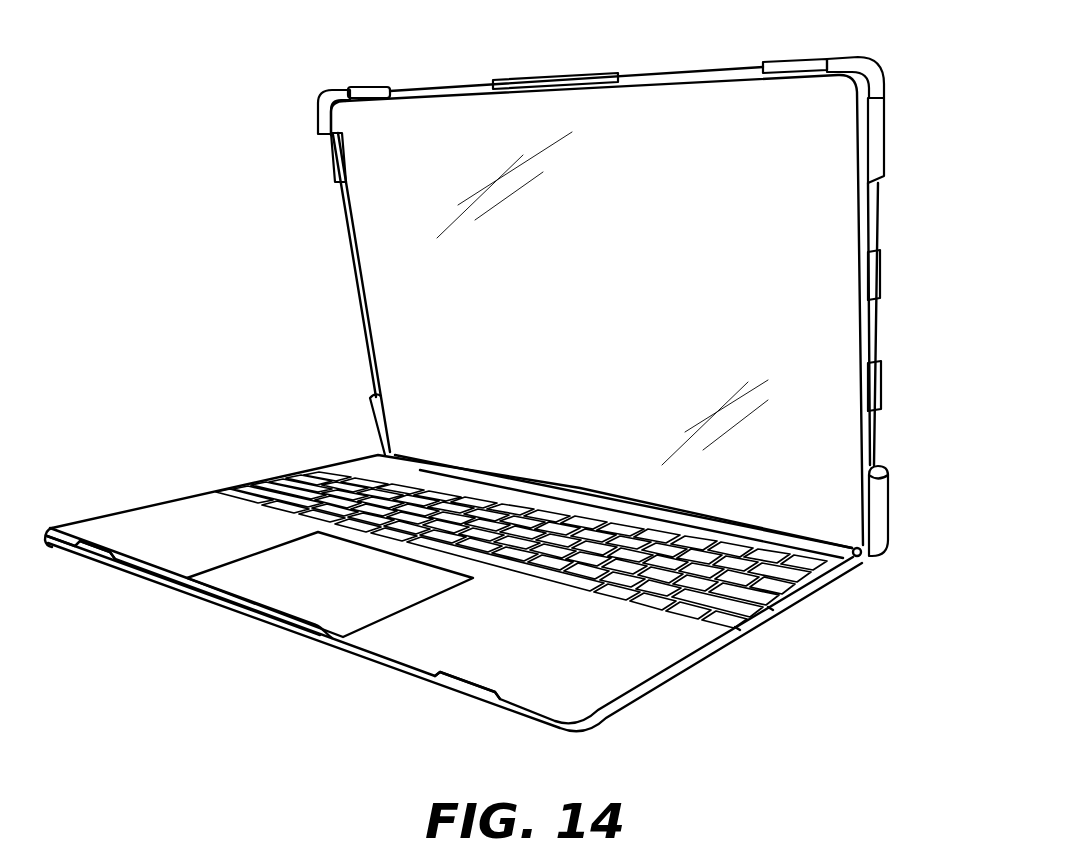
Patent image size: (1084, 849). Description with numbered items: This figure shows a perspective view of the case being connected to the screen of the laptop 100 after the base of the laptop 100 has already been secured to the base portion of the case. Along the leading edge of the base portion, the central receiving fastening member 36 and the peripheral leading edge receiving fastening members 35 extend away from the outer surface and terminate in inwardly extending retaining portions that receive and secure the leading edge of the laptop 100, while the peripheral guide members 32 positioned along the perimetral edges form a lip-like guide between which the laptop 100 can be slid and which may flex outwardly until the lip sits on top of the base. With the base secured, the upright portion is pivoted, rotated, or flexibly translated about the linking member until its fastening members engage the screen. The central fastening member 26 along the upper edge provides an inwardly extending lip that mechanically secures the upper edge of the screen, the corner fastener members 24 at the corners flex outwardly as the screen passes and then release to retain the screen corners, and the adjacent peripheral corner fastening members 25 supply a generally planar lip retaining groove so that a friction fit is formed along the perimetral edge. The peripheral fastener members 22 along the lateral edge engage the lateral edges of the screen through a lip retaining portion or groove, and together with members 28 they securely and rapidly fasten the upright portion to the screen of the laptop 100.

The laptop 100 is at (500, 386).
The peripheral fastener member 22 is at (886, 278).
The corner fastener member 24 is at (322, 95).
The peripheral corner fastening member 25 is at (370, 92).
The central fastening member 26 is at (565, 80).
The member 28 is at (890, 505).
The peripheral guide member 32 is at (768, 618).
The peripheral leading edge receiving fastening member 35 is at (93, 557).
The central receiving fastening member 36 is at (265, 618).